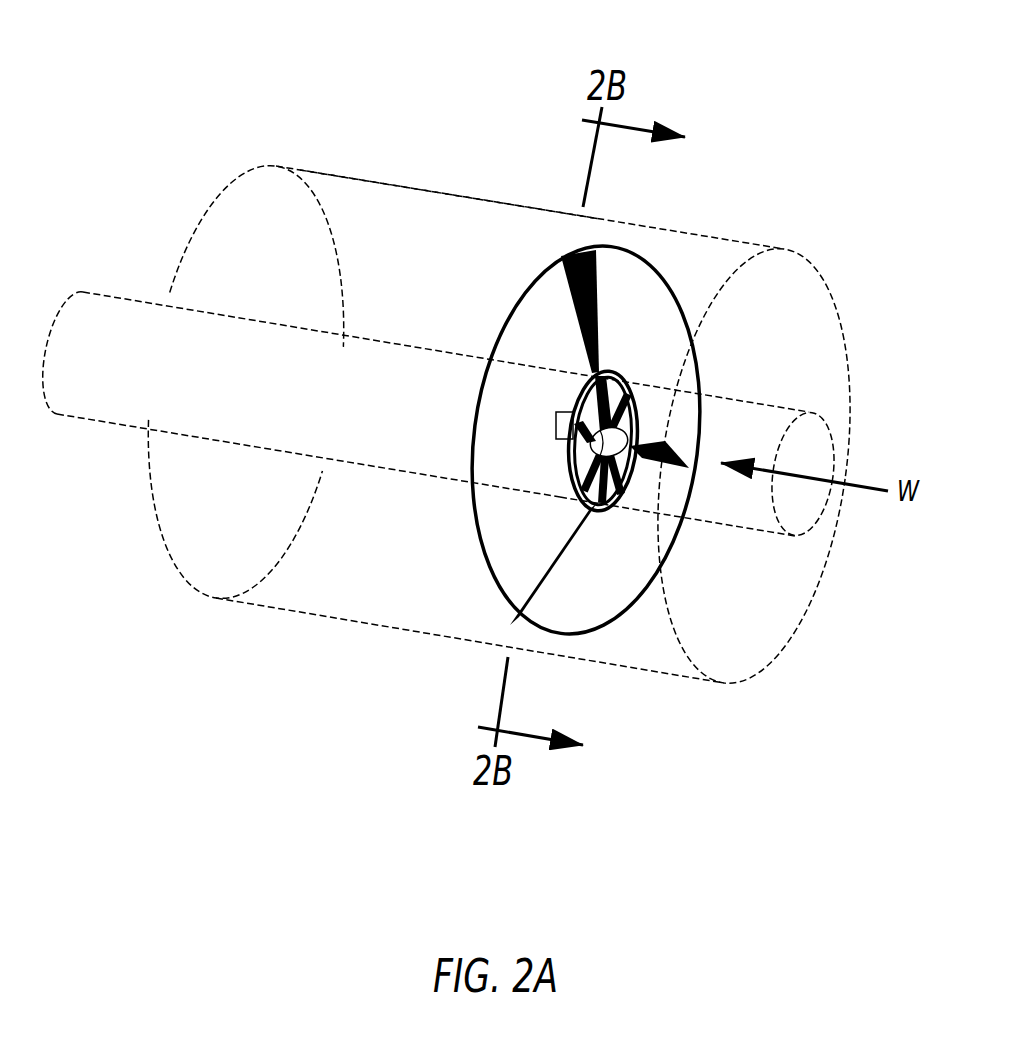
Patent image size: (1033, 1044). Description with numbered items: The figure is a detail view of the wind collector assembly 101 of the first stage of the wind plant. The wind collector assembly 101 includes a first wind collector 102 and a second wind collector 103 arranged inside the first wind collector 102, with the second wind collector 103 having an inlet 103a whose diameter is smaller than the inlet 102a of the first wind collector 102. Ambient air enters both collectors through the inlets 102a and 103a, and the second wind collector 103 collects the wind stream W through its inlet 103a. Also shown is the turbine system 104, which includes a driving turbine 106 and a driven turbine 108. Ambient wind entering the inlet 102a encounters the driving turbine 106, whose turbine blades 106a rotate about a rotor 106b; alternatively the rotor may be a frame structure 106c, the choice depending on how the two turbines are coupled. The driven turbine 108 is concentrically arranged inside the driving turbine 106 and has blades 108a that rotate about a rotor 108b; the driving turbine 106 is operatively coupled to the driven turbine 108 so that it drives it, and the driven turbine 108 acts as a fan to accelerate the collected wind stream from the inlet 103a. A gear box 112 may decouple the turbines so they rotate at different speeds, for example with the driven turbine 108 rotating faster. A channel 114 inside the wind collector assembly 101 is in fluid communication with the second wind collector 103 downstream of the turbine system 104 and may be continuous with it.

The wind collector assembly 101 is at (288, 80).
The first wind collector 102 is at (516, 424).
The inlet of the first wind collector 102a is at (856, 315).
The second wind collector 103 is at (743, 450).
The inlet of the second wind collector 103a is at (806, 505).
The turbine system 104 is at (453, 277).
The driving turbine 106 is at (517, 412).
The turbine blades 106a is at (600, 297).
The rotor 106b is at (565, 393).
The rotor frame structure 106c is at (533, 287).
The driven turbine 108 is at (625, 485).
The blades 108a is at (588, 512).
The rotor 108b is at (614, 452).
The gear box 112 is at (556, 425).
The channel 114 is at (140, 297).